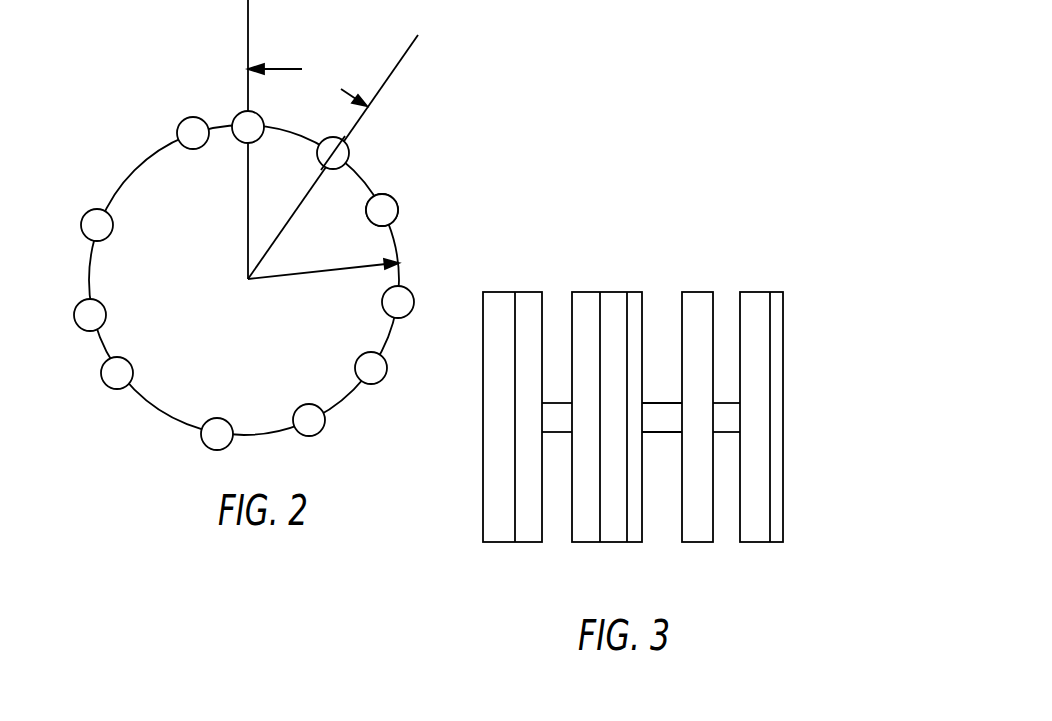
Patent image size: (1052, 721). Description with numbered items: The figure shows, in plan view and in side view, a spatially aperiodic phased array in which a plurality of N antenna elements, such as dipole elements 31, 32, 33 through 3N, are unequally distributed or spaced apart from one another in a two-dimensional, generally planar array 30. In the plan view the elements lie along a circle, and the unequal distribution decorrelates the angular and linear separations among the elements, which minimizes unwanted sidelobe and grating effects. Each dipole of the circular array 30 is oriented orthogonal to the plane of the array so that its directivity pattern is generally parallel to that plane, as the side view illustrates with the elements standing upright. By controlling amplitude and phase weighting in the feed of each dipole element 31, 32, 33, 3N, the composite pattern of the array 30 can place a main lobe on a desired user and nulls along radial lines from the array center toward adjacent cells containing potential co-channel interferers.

In FIG. 2, the planar array 30 is at (436, 169).
In FIG. 3, the planar array 30 is at (838, 390).
In FIG. 2, the antenna element 31 is at (237, 116).
In FIG. 2, the antenna element 32 is at (348, 148).
In FIG. 2, the antenna element 33 is at (398, 208).
In FIG. 2, the Nth antenna element 3N is at (179, 126).